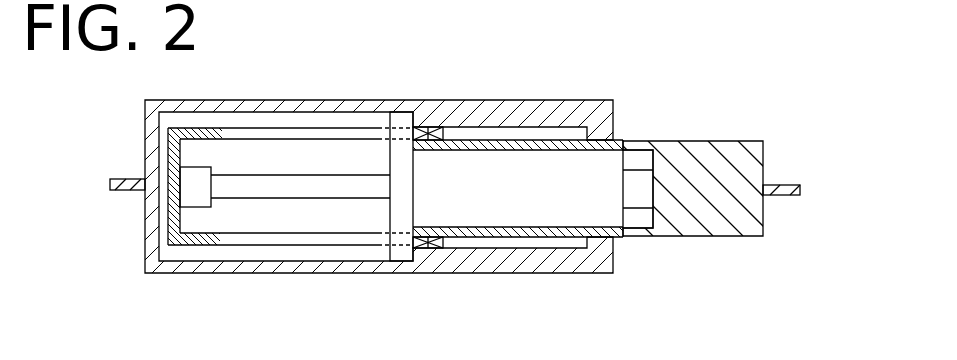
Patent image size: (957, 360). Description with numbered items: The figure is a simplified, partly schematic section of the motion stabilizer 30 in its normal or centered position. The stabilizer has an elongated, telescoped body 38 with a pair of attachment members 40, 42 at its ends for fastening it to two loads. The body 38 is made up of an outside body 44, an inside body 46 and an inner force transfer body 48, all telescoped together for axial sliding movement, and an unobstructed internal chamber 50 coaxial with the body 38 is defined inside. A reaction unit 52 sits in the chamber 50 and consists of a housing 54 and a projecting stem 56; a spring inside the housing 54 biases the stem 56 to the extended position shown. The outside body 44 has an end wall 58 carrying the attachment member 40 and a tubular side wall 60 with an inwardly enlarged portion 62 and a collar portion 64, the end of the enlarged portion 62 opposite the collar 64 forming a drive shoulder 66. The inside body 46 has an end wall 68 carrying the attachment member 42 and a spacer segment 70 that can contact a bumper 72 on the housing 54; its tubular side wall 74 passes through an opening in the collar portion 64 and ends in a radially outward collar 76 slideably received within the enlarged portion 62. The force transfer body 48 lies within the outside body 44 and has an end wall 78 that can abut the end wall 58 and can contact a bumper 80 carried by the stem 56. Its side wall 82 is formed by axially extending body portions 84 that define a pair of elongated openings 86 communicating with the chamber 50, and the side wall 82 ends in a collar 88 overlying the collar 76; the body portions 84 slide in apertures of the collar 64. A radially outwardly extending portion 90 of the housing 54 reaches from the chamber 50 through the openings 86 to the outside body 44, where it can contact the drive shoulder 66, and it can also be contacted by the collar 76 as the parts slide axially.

The motion stabilizer 30 is at (680, 58).
The elongated telescoped body 38 is at (456, 272).
The attachment member 40 is at (112, 187).
The attachment member 42 is at (785, 183).
The outside body 44 is at (282, 105).
The inside body 46 is at (572, 235).
The inner force transfer body 48 is at (205, 102).
The internal chamber 50 is at (213, 233).
The reaction unit 52 is at (452, 194).
The housing 54 is at (508, 218).
The projecting stem 56 is at (272, 182).
The end wall 58 is at (145, 138).
The tubular side wall 60 is at (350, 107).
The inwardly enlarged portion 62 is at (523, 126).
The collar portion 64 is at (612, 132).
The drive shoulder 66 is at (398, 262).
The end wall 68 is at (767, 158).
The spacer segment 70 is at (750, 220).
The bumper 72 is at (638, 195).
The tubular side wall 74 is at (590, 130).
The collar 76 is at (425, 128).
The end wall 78 is at (176, 153).
The bumper 80 is at (192, 188).
The side wall 82 is at (192, 243).
The body portions 84 is at (312, 128).
The axially extending openings 86 is at (232, 135).
The collar 88 is at (443, 133).
The radially outwardly extending portion 90 is at (392, 212).